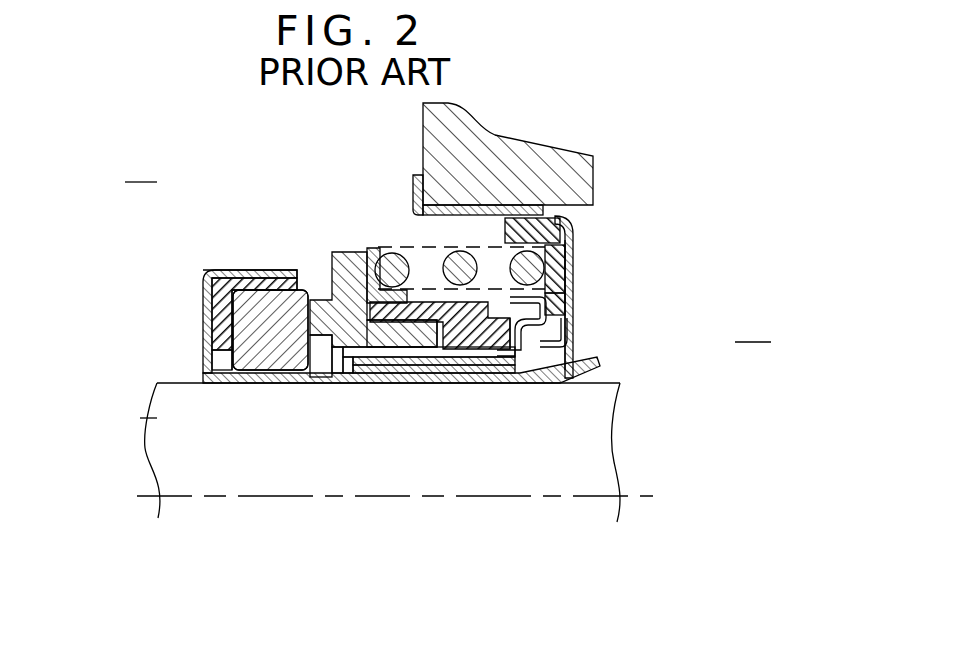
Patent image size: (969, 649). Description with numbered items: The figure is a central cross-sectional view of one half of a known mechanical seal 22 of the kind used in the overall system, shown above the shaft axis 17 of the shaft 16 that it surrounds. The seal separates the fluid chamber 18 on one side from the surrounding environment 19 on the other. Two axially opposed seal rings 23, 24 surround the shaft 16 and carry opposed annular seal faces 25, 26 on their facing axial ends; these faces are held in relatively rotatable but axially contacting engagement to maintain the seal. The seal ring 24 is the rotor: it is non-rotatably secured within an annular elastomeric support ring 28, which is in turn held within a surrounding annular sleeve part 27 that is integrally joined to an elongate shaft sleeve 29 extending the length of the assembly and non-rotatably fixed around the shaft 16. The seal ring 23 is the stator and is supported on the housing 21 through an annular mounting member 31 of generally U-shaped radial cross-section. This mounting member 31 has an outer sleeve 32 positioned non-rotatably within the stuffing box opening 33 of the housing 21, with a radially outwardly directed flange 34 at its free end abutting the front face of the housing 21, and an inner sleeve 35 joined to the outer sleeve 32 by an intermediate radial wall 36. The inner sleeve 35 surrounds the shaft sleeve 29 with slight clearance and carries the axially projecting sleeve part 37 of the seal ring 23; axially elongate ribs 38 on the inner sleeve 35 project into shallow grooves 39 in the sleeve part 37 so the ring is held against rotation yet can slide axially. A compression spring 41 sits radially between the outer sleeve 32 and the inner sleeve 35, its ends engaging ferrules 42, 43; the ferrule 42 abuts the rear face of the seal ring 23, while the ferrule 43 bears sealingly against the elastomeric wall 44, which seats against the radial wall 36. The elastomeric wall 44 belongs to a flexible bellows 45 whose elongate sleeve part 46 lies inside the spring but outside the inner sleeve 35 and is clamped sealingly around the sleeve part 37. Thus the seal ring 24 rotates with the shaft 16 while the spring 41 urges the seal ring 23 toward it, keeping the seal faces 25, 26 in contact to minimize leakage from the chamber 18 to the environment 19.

The shaft 16 is at (157, 418).
The shaft axis 17 is at (376, 497).
The fluid chamber 18 is at (141, 164).
The surrounding environment 19 is at (753, 323).
The housing 21 is at (573, 153).
The mechanical seal 22 is at (275, 184).
The seal ring 23 is at (345, 263).
The seal ring 24 is at (268, 307).
The seal face 25 is at (300, 318).
The seal face 26 is at (325, 300).
The sleeve part 27 is at (233, 268).
The elastomeric support ring 28 is at (207, 295).
The shaft sleeve 29 is at (410, 383).
The mounting member 31 is at (584, 283).
The outer sleeve 32 is at (492, 212).
The stuffing box opening 33 is at (576, 214).
The flange 34 is at (411, 193).
The inner sleeve 35 is at (455, 358).
The radial wall 36 is at (566, 267).
The sleeve part 37 is at (367, 370).
The ribs 38 is at (378, 357).
The grooves 39 is at (338, 375).
The compression spring 41 is at (457, 250).
The ferrule 42 is at (383, 257).
The ferrule 43 is at (568, 296).
The elastomeric wall 44 is at (558, 248).
The bellows 45 is at (437, 320).
The sleeve part 46 is at (497, 372).